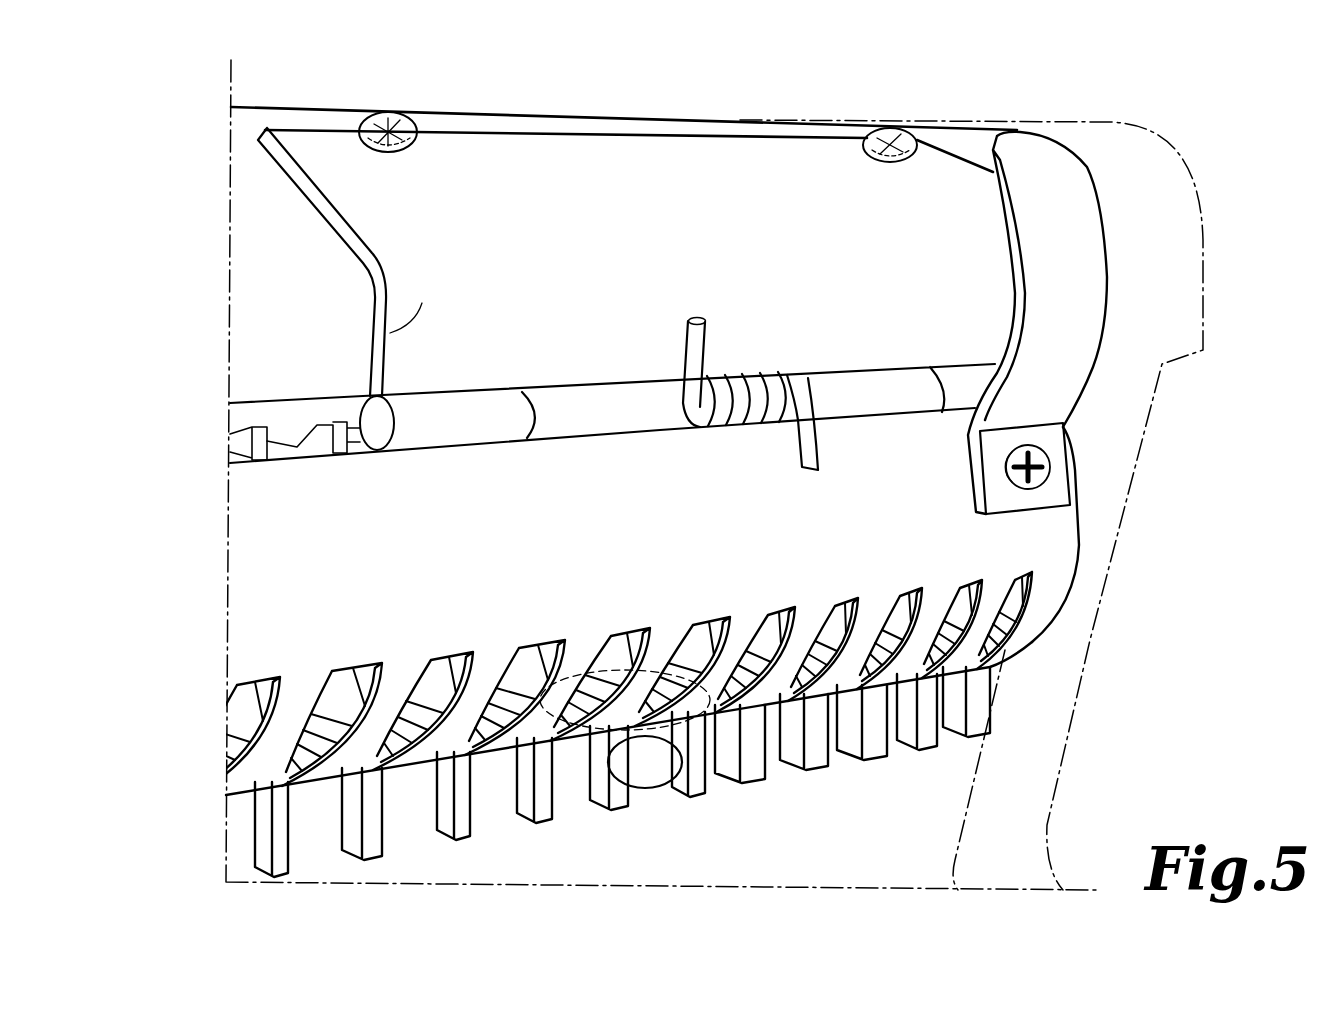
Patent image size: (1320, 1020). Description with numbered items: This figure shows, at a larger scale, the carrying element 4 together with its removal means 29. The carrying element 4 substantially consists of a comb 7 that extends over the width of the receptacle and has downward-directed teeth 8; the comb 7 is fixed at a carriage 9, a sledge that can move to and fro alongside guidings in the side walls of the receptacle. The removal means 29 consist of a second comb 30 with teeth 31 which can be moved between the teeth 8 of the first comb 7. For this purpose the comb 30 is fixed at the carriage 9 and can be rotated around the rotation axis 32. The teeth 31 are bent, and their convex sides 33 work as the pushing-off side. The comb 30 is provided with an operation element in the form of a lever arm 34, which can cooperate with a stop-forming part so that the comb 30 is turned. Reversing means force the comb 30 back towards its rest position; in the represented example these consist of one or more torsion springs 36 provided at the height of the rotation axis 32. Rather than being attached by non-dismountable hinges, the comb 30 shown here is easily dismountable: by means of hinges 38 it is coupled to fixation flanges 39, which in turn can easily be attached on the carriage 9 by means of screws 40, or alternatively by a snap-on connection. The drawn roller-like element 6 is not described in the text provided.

The carrying element 4 is at (260, 405).
The roller 6 is at (648, 773).
The comb 7 is at (232, 447).
The teeth 8 is at (280, 866).
The carriage 9 is at (247, 217).
The removal means 29 is at (1088, 556).
The second comb 30 is at (247, 617).
The teeth 31 is at (360, 747).
The rotation axis 32 is at (377, 422).
The convex sides 33 is at (315, 781).
The lever arm 34 is at (1098, 278).
The torsion springs 36 is at (705, 340).
The hinges 38 is at (553, 395).
The fixation flanges 39 is at (377, 333).
The screws 40 is at (397, 121).